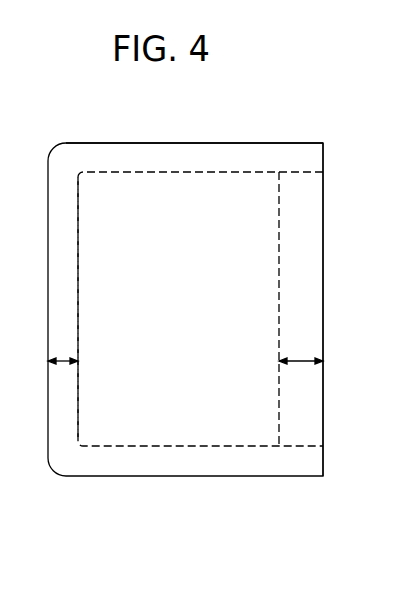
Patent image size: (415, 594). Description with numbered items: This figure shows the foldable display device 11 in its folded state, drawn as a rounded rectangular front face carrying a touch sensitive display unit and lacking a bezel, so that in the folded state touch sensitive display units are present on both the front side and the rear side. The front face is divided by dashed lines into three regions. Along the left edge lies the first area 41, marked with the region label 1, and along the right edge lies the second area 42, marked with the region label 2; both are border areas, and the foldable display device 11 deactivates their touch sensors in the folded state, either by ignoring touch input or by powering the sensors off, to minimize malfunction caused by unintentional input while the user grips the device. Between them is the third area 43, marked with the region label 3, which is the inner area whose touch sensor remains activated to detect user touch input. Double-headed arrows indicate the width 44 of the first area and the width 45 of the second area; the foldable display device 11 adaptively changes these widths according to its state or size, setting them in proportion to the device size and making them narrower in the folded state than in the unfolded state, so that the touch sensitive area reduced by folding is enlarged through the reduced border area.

The foldable display device 11 is at (259, 476).
The first area 41 is at (137, 160).
The second area 42 is at (313, 254).
The third area 43 is at (207, 192).
The width of the first area 44 is at (62, 363).
The width of the second area 45 is at (303, 363).
The first region 1 is at (68, 309).
The second region 2 is at (293, 309).
The third region 3 is at (178, 311).